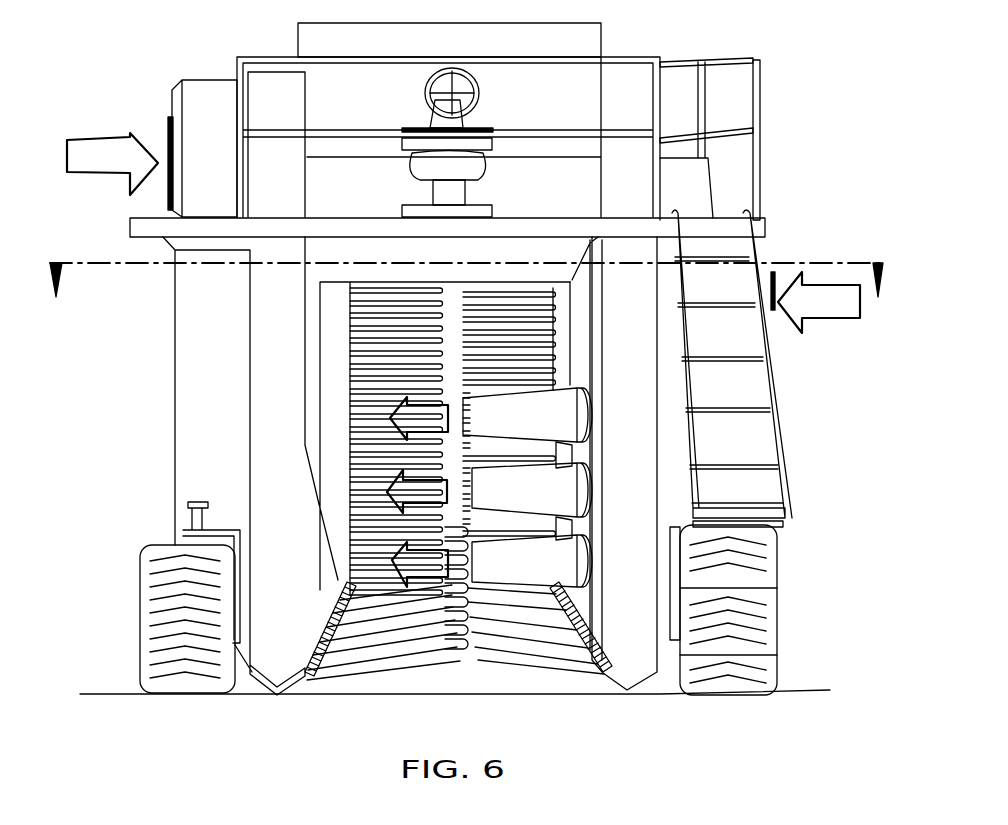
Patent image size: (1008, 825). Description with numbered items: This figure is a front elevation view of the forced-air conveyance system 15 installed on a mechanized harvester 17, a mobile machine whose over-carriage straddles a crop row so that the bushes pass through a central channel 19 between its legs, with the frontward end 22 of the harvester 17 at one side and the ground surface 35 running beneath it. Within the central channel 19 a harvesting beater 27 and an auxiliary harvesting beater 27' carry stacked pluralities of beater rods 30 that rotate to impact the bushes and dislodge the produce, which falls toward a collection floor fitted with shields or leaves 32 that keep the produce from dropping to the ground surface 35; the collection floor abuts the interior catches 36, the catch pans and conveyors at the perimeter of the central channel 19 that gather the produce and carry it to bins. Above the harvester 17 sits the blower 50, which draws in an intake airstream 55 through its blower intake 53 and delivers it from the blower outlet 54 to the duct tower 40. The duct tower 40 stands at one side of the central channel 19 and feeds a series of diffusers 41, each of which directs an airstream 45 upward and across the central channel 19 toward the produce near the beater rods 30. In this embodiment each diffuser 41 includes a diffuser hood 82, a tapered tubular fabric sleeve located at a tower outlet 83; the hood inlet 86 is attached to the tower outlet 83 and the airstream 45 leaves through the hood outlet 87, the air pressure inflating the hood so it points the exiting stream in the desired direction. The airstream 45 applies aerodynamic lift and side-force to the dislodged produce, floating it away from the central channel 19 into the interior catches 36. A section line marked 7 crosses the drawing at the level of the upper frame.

The forced-air conveyance system 15 is at (836, 197).
The mechanized harvester 17 is at (795, 55).
The central channel 19 is at (468, 688).
The frontward end 22 is at (270, 667).
The harvesting beater 27 is at (275, 441).
The auxiliary harvesting beater 27' is at (655, 414).
The beater rods 30 is at (390, 562).
The shields or leaves 32 is at (515, 647).
The ground surface 35 is at (122, 683).
The interior catches 36 is at (307, 672).
The duct tower 40 is at (580, 293).
The diffuser 41 is at (573, 562).
The airstream 45 is at (420, 563).
The blower 50 is at (195, 103).
The blower intake 53 is at (168, 128).
The blower outlet 54 is at (163, 215).
The intake airstream 55 is at (92, 158).
The section line 7- 7 is at (467, 295).
The diffuser hood 82 is at (550, 408).
The tower outlet 83 is at (588, 440).
The hood inlet 86 is at (572, 455).
The hood outlet 87 is at (455, 412).